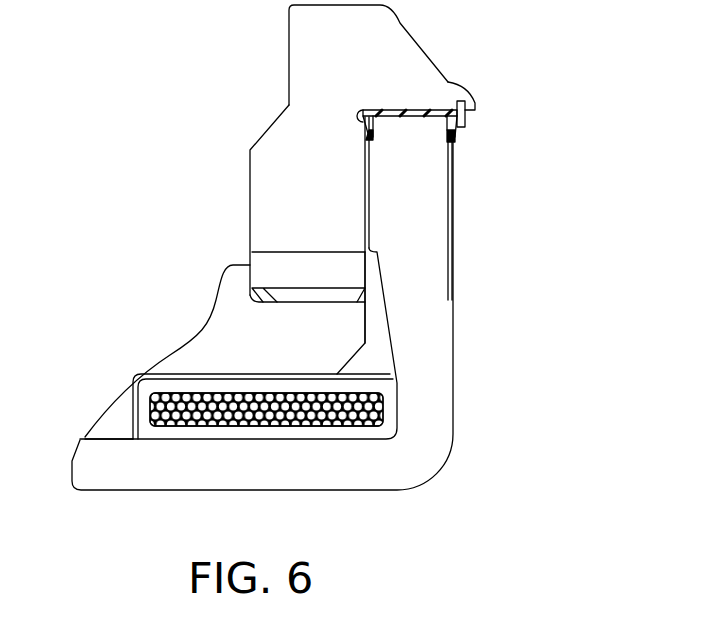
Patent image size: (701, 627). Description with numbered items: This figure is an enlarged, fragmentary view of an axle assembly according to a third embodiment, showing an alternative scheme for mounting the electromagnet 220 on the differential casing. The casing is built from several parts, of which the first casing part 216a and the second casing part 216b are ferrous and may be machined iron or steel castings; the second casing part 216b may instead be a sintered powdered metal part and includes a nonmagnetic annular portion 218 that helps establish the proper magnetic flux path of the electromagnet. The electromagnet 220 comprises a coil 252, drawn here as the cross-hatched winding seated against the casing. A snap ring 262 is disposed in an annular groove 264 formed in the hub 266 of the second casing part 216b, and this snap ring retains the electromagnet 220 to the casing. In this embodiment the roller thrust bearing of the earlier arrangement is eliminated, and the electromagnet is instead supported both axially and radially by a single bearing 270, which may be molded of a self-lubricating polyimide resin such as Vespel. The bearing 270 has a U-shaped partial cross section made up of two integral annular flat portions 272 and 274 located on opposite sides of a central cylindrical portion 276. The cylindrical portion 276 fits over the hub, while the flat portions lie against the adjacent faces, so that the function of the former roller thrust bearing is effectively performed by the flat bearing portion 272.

The first casing part 216a is at (216, 326).
The second casing part 216b is at (403, 50).
The nonmagnetic annular portion 218 is at (280, 263).
The electromagnet 220 is at (437, 363).
The coil 252 is at (257, 428).
The snap ring 262 is at (465, 125).
The annular groove 264 is at (462, 100).
The hub 266 is at (447, 85).
The bearing 270 is at (403, 136).
The annular flat portion 272 is at (365, 133).
The annular flat portion 274 is at (457, 138).
The central cylindrical portion 276 is at (397, 110).